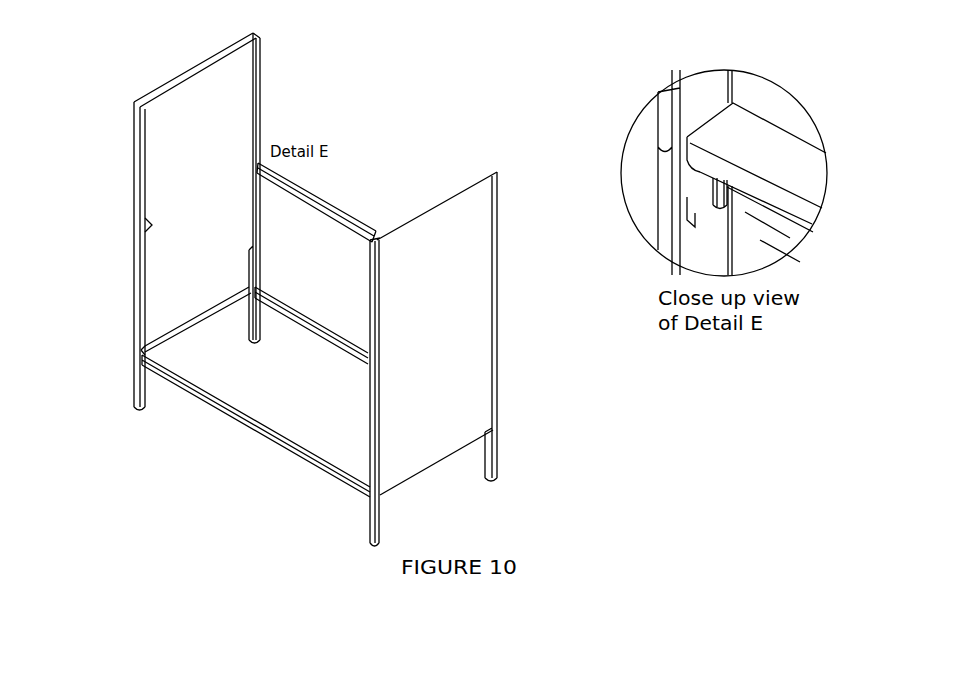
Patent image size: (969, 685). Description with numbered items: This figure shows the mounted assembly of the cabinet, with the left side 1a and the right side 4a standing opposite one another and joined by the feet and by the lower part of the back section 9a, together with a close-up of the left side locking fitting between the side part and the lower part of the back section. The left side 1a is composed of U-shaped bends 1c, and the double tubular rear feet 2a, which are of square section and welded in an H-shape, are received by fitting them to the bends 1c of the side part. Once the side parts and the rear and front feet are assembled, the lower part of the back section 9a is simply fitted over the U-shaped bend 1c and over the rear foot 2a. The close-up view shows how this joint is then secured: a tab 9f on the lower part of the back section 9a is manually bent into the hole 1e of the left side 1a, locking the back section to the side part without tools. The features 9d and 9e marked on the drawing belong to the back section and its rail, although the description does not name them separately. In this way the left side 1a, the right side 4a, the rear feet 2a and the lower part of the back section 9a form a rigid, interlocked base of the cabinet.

The left side 1a is at (188, 168).
The U-shaped bend 1c is at (704, 88).
The hole 1e is at (690, 188).
The rear foot 2a is at (305, 323).
The right side 4a is at (453, 423).
The lower part of the back section 9a is at (762, 238).
The rail top flange 9d is at (783, 160).
The top rail 9e is at (366, 240).
The tab 9f is at (703, 208).